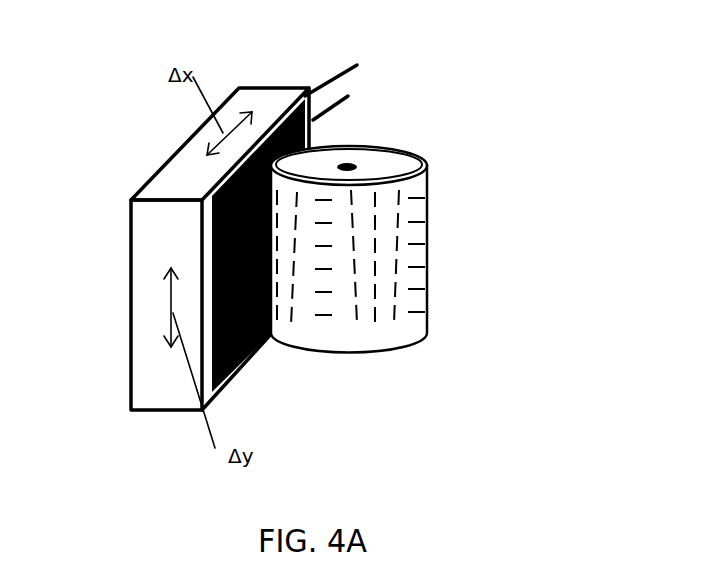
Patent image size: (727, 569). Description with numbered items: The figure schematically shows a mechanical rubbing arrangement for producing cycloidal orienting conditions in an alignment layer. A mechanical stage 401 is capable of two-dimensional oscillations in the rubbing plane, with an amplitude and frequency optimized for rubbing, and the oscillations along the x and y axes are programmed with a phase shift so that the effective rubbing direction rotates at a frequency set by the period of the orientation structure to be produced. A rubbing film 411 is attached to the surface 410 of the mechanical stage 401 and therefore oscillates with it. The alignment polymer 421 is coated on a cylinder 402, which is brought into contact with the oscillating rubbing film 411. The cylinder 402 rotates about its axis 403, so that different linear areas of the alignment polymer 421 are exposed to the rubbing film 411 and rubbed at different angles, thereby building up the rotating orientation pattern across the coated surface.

The mechanical stage 401 is at (147, 245).
The cylinder 402 is at (388, 166).
The axis 403 is at (353, 165).
The surface 410 is at (351, 68).
The film 411 is at (356, 99).
The alignment polymer 421 is at (390, 302).